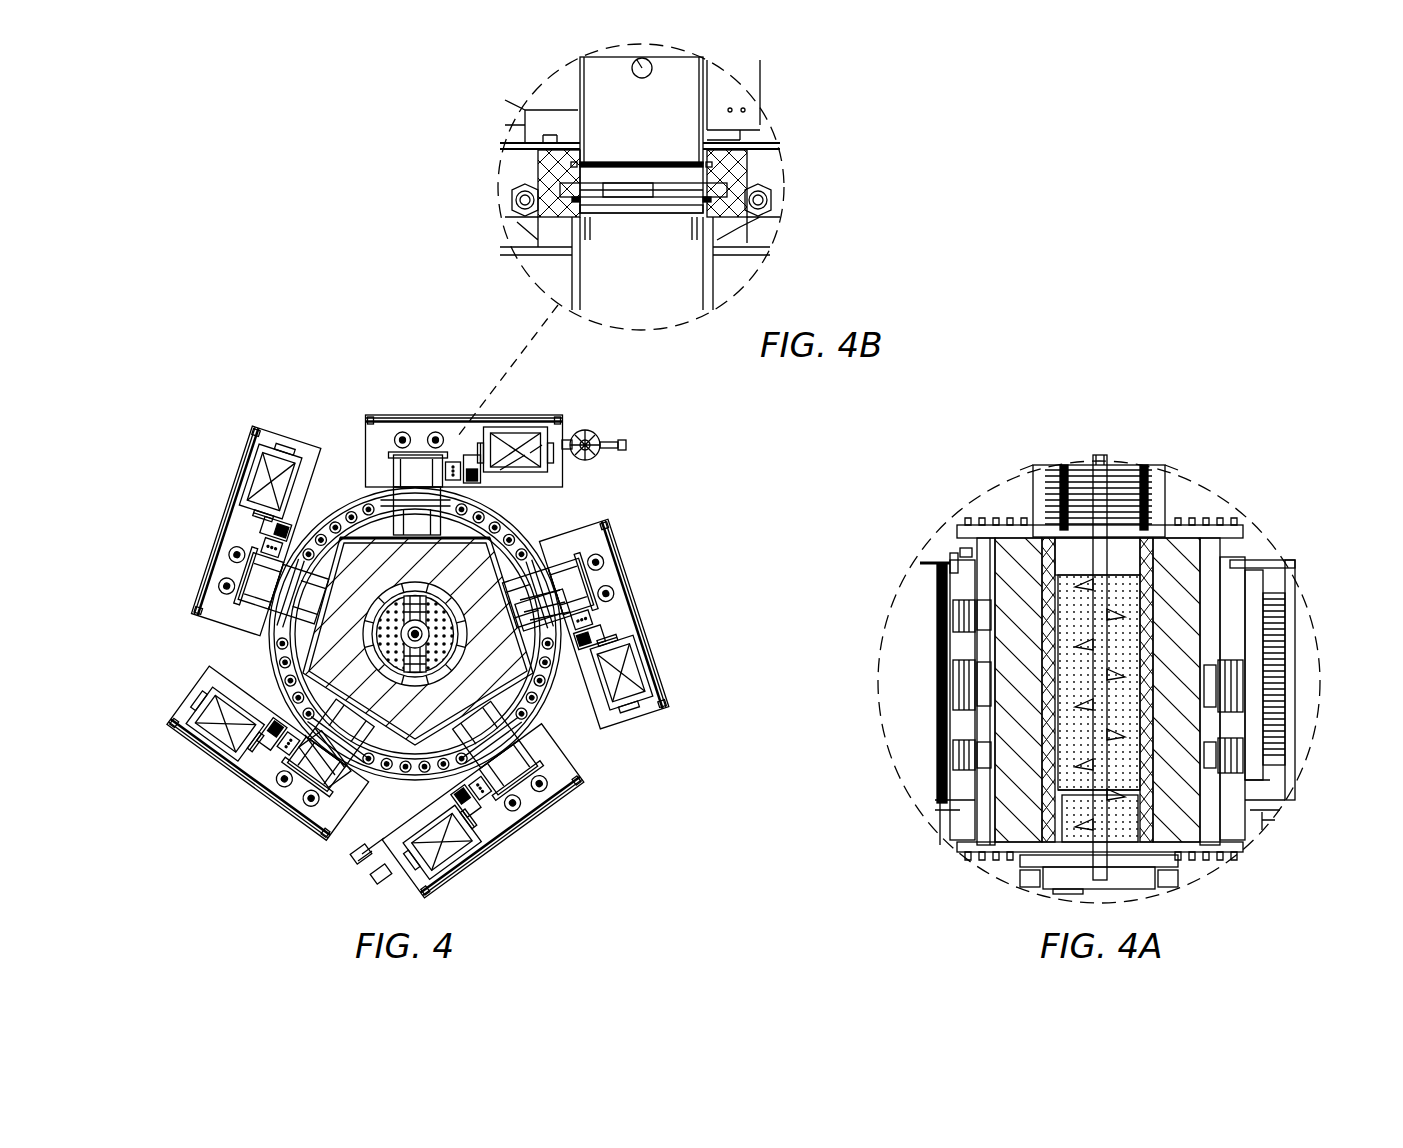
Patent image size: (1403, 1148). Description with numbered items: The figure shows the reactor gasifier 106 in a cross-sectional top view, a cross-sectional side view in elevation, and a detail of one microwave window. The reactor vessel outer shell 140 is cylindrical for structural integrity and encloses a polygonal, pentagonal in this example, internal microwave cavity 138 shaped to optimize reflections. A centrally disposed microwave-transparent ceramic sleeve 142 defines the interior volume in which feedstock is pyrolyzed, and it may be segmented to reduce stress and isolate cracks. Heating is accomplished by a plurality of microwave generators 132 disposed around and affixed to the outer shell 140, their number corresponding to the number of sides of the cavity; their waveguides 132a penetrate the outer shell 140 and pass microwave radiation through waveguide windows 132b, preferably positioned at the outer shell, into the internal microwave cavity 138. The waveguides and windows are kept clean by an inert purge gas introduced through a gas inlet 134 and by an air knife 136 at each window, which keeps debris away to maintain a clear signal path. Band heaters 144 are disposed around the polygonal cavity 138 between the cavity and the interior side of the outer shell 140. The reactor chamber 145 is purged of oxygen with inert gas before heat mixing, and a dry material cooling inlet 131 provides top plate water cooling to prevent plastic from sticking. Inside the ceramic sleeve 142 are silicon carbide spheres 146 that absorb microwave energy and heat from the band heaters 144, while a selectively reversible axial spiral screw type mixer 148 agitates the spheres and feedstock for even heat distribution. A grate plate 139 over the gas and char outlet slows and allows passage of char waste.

In FIG. 4, the clamping assembly 106 is at (345, 366).
In FIG. 4A, the clamping assembly 106 is at (1268, 392).
In FIG. 4A, the dry material cooling inlet 131 is at (1043, 492).
In FIG. 4, the microwave generators 132 is at (440, 415).
In FIG. 4B, the waveguides 132a is at (620, 267).
In FIG. 4B, the waveguide windows 132b is at (653, 203).
In FIG. 4B, the gas inlet 134 is at (640, 68).
In FIG. 4, the air knife 136 is at (357, 813).
In FIG. 4B, the air knife 136 is at (680, 187).
In FIG. 4, the internal microwave cavity 138 is at (637, 612).
In FIG. 4, the grate plate 139 is at (400, 580).
In FIG. 4, the reactor vessel outer shell 140 is at (548, 700).
In FIG. 4A, the reactor vessel outer shell 140 is at (1215, 588).
In FIG. 4, the microwave-transparent ceramic sleeve 142 is at (533, 542).
In FIG. 4A, the microwave-transparent ceramic sleeve 142 is at (1153, 673).
In FIG. 4A, the band heaters 144 is at (953, 617).
In FIG. 4A, the reactor chamber 145 is at (1120, 553).
In FIG. 4A, the silicon carbide spheres 146 is at (1067, 650).
In FIG. 4, the axial spiral screw type mixer 148 is at (367, 667).
In FIG. 4A, the axial spiral screw type mixer 148 is at (1113, 575).